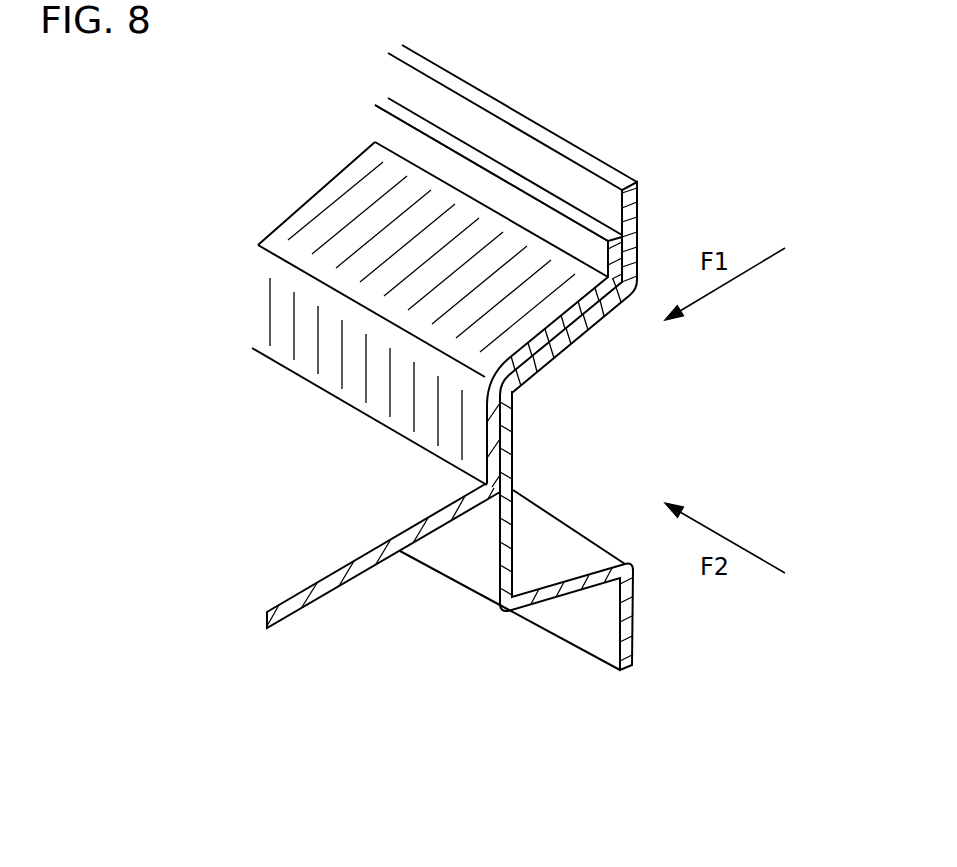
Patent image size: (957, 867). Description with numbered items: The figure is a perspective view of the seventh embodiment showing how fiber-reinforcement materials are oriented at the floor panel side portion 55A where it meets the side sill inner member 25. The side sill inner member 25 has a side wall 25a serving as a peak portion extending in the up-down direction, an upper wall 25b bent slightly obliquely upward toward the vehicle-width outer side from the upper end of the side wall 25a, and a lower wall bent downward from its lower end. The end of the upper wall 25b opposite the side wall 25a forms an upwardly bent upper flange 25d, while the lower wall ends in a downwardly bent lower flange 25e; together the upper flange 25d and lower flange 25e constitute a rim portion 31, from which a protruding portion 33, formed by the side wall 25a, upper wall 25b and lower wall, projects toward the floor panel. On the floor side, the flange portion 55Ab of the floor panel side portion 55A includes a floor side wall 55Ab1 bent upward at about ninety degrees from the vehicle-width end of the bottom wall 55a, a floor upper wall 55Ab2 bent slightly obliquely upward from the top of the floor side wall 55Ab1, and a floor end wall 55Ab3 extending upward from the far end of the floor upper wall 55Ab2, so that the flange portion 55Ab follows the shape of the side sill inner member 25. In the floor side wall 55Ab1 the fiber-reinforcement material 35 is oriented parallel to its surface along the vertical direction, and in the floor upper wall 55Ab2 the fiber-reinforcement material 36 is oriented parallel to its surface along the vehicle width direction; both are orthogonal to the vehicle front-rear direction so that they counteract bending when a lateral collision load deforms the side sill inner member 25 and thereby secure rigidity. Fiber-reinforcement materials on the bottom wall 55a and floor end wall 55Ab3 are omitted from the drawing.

The side sill inner member 25 is at (554, 390).
The side wall 25a is at (473, 548).
The upper wall 25b is at (570, 347).
The upper flange 25d is at (593, 197).
The lower flange 25e is at (590, 618).
The rim portion 31 is at (529, 390).
The protruding portion 33 is at (550, 485).
The fiber-reinforcement material 35 is at (295, 323).
The fiber-reinforcement material 36 is at (333, 233).
The floor panel side portion 55A is at (369, 372).
The bottom wall 55a is at (330, 553).
The flange portion 55Ab is at (362, 259).
The floor side wall 55Ab1 is at (302, 370).
The floor upper wall 55Ab2 is at (412, 245).
The floor end wall 55Ab3 is at (470, 187).